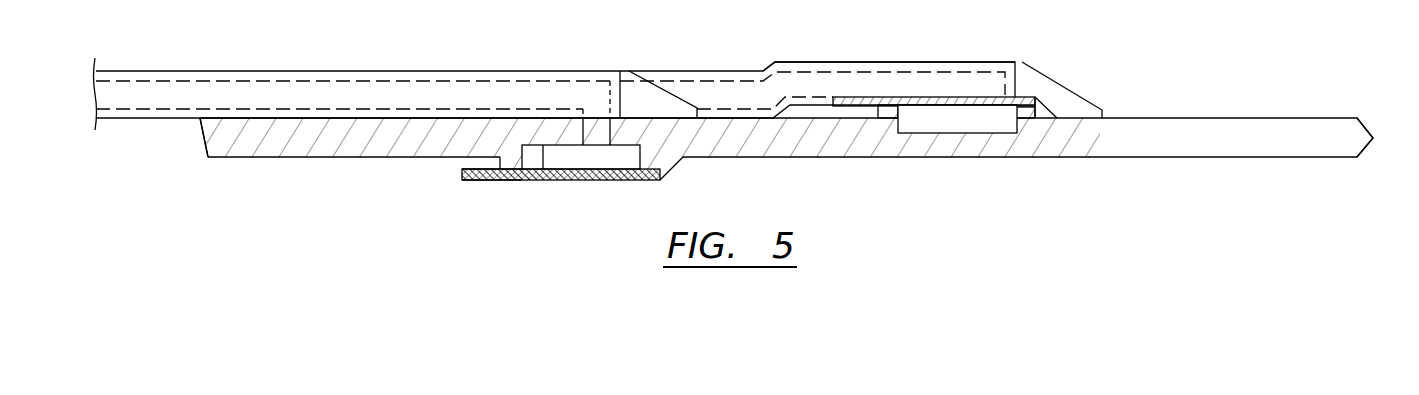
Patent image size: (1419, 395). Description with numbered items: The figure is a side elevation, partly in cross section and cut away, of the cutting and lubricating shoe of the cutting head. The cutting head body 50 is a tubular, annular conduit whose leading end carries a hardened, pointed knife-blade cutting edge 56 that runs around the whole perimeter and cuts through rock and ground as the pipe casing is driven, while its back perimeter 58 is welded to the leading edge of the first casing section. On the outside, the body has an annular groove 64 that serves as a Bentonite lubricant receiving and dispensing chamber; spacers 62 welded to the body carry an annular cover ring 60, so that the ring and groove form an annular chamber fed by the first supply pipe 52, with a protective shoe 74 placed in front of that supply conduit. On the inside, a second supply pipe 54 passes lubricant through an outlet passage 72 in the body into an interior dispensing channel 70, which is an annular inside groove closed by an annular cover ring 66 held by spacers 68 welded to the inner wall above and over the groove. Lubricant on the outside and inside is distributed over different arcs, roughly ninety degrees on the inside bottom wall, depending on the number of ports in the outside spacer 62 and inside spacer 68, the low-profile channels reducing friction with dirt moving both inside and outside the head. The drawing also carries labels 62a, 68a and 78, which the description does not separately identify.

The cutting head body 50 is at (1243, 119).
The first supply pipe 52 is at (787, 62).
The second supply pipe 54 is at (298, 70).
The leading cutting edge 56 is at (1377, 137).
The back perimeter 58 is at (200, 136).
The annular cover ring 60 is at (925, 107).
The spacers 62 is at (1023, 125).
The adhesive pad 62a is at (885, 125).
The annular groove 64 is at (972, 134).
The annular cover ring 66 is at (615, 181).
The spacers 68 is at (653, 181).
The plate portion 68a is at (506, 181).
The interior dispensing channel 70 is at (543, 181).
The outlet passage 72 is at (594, 134).
The protective shoe 74 is at (1073, 93).
The wedge 78 is at (668, 92).